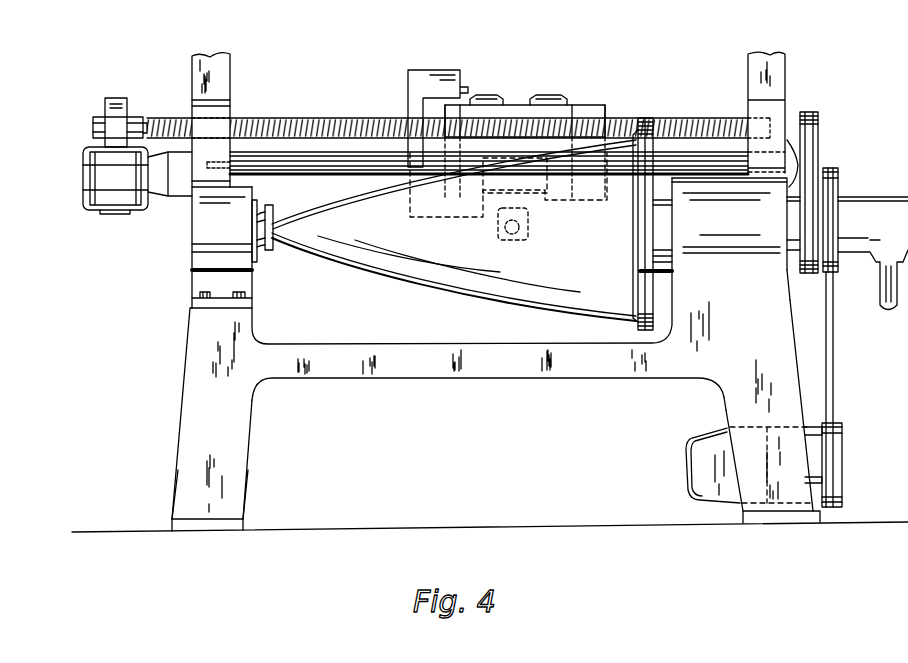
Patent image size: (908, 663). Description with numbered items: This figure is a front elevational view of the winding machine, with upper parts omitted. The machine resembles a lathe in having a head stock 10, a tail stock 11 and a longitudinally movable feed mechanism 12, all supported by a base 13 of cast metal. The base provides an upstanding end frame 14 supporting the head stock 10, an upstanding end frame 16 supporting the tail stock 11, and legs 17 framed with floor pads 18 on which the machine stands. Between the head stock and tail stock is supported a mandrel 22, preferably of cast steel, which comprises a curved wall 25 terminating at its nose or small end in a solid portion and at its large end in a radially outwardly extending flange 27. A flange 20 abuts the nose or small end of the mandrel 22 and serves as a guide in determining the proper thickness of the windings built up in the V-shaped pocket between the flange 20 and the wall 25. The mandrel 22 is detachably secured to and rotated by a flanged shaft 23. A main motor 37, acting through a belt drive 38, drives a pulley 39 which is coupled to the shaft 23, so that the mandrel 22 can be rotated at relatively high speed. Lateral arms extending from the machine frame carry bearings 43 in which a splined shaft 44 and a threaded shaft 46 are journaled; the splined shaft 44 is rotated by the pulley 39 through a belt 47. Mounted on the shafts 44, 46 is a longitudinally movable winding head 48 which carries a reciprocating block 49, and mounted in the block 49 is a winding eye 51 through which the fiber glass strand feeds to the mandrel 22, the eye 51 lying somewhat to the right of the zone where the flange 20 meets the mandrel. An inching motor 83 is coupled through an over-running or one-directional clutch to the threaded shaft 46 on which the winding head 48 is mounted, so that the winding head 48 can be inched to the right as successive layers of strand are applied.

The head stock 10 is at (788, 276).
The tail stock 11 is at (205, 236).
The feed mechanism 12 is at (603, 98).
The base 13 is at (520, 365).
The end frame 14 is at (773, 340).
The end frame 16 is at (202, 314).
The legs 17 is at (198, 428).
The floor pads 18 is at (210, 522).
The flange 20 is at (268, 252).
The mandrel 22 is at (424, 288).
The flanged shaft 23 is at (668, 260).
The curved wall 25 is at (340, 262).
The flange 27 is at (640, 322).
The main motor 37 is at (707, 468).
The belt drive 38 is at (832, 383).
The pulley 39 is at (840, 185).
The bearings 43 is at (196, 106).
The splined shaft 44 is at (282, 178).
The threaded shaft 46 is at (356, 117).
The belt 47 is at (808, 150).
The winding head 48 is at (606, 105).
The reciprocating block 49 is at (548, 210).
The winding eye 51 is at (520, 238).
The inching motor 83 is at (82, 180).